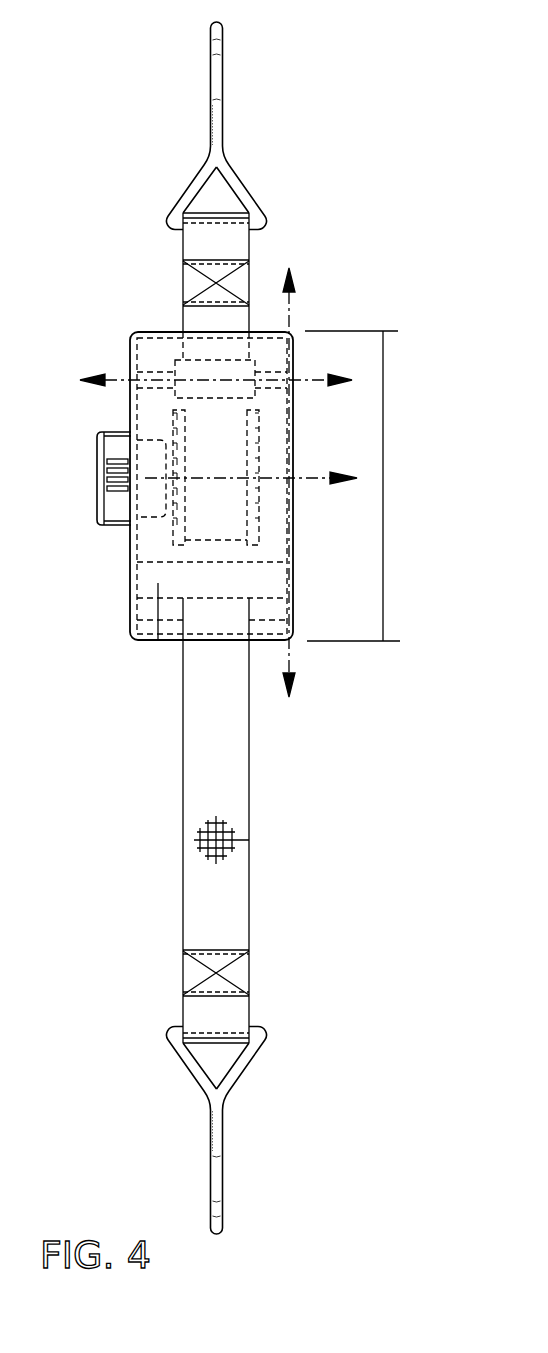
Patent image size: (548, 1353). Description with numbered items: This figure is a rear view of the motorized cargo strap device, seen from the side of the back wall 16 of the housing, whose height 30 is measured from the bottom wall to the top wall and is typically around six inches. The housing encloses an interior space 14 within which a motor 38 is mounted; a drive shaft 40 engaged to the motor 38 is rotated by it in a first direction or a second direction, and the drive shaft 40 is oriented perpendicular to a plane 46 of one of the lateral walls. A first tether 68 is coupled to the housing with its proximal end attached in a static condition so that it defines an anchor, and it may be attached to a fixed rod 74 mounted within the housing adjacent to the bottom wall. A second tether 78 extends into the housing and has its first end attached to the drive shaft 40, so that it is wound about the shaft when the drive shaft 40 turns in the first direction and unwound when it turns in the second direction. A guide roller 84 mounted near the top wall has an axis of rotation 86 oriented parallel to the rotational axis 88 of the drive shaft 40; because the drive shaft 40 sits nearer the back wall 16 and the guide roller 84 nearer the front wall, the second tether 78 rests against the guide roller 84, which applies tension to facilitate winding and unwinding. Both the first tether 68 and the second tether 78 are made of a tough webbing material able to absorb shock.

The interior space 14 is at (230, 628).
The back wall 16 is at (293, 558).
The height 30 is at (384, 487).
The motor 38 is at (152, 493).
The drive shaft 40 is at (173, 476).
The plane 46 is at (290, 304).
The first tether 68 is at (296, 834).
The fixed rod 74 is at (158, 640).
The second tether 78 is at (300, 181).
The guide roller 84 is at (207, 372).
The axis of rotation 86 is at (318, 382).
The rotational axis 88 is at (318, 480).